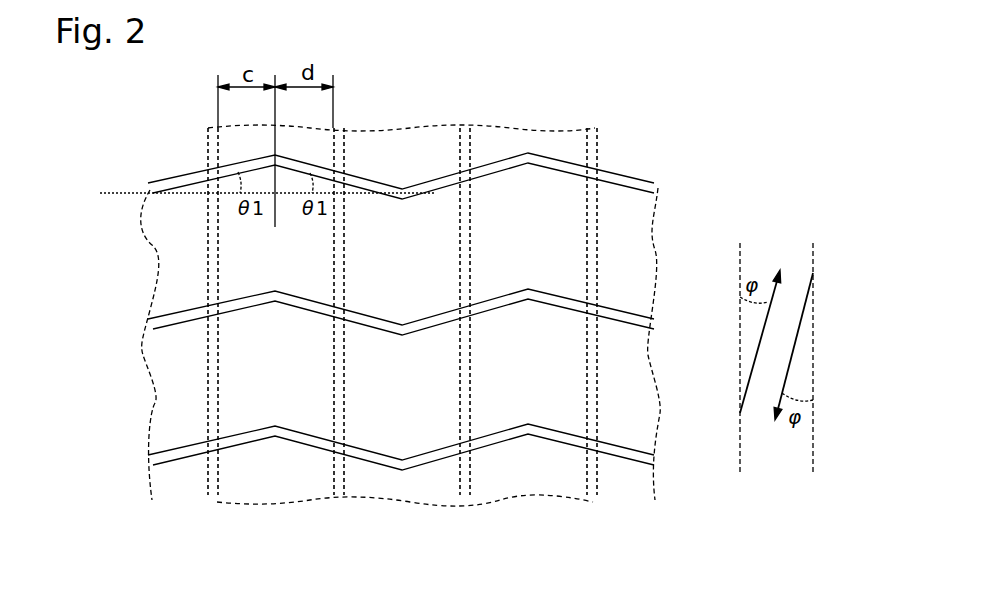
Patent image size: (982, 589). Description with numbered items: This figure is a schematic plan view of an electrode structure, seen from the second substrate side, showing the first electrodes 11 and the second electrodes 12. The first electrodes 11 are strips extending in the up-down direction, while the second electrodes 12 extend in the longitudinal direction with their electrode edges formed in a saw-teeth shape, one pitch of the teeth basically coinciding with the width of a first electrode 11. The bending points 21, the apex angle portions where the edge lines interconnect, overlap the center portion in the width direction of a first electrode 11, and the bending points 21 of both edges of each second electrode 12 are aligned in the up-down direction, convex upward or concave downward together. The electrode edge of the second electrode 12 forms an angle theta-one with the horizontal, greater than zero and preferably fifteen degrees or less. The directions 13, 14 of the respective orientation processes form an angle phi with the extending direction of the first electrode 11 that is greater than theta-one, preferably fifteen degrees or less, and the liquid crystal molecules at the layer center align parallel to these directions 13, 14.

The first electrode 11 is at (278, 507).
The second electrode 12 is at (157, 242).
The direction of orientation process 13 is at (757, 347).
The direction of orientation process 14 is at (793, 353).
The bending point 21 is at (401, 182).